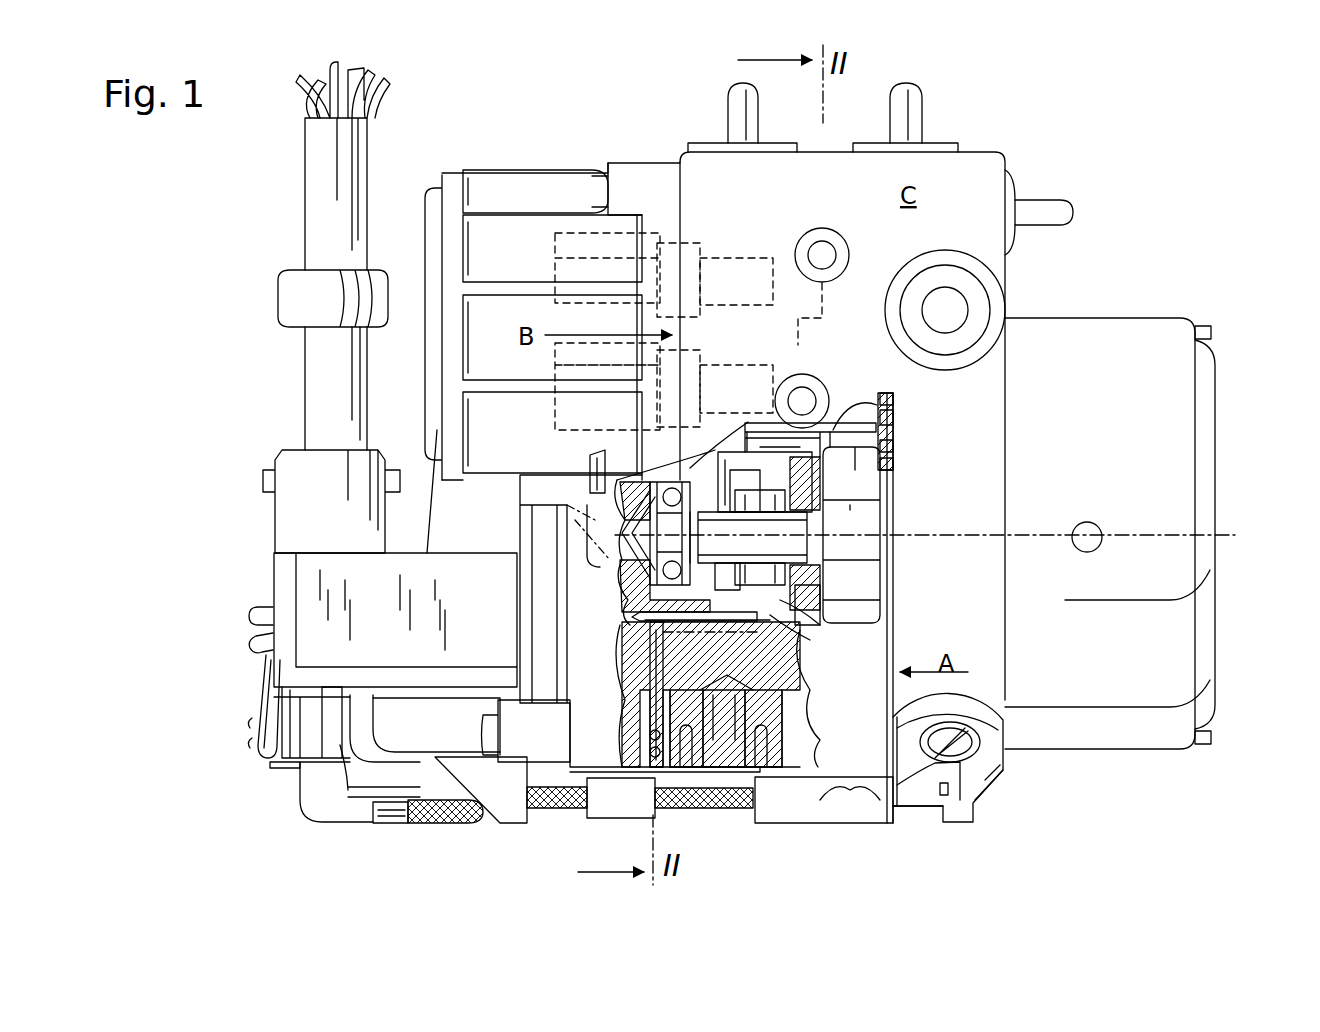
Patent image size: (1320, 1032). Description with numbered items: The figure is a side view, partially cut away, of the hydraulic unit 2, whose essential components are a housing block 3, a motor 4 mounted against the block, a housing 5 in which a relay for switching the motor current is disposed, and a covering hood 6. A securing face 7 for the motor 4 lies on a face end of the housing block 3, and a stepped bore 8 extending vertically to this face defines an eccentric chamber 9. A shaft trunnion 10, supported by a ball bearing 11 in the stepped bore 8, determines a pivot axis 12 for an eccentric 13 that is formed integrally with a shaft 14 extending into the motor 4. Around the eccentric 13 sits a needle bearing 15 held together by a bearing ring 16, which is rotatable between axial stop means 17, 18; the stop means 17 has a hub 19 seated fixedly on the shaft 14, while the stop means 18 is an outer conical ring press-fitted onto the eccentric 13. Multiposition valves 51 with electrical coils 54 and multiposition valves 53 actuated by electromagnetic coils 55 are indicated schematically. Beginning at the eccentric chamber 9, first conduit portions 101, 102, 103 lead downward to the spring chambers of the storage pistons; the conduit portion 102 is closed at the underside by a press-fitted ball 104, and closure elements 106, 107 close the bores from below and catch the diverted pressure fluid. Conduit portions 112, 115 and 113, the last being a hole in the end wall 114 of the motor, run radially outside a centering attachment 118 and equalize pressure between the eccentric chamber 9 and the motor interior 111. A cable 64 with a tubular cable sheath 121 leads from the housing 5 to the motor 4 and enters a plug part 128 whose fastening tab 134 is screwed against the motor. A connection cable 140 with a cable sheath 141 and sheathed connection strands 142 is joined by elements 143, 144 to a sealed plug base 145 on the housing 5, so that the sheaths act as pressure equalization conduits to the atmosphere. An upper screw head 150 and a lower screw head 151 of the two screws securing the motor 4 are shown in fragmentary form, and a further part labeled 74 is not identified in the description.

The hydraulic unit 2 is at (995, 105).
The housing block 3 is at (992, 172).
The motor 4 is at (1160, 526).
The housing 5 is at (395, 620).
The covering hood 6 is at (432, 216).
The securing face 7 is at (885, 440).
The stepped bore 8 is at (724, 457).
The eccentric chamber 9 is at (755, 458).
The shaft trunnion 10 is at (596, 490).
The ball bearing 11 is at (617, 572).
The pivot axis 12 is at (540, 504).
The eccentric 13 is at (748, 537).
The shaft 14 is at (820, 520).
The needle bearing 15 is at (792, 553).
The bearing ring 16 is at (790, 612).
The axial stop means 17 is at (768, 600).
The axial stop means 18 is at (745, 630).
The hub 19 is at (775, 582).
The multiposition valves 51 is at (722, 270).
The multiposition valves 53 is at (745, 383).
The electrical coils 54 is at (560, 252).
The electromagnetic coils 55 is at (560, 398).
The cable 64 is at (443, 812).
The housing bracket 74 is at (562, 717).
The conduit portion 101 is at (622, 612).
The conduit portion 102 is at (648, 665).
The conduit portion 103 is at (652, 733).
The ball 104 is at (655, 758).
The closure element 106 is at (605, 797).
The closure element 107 is at (705, 805).
The interior of the motor 111 is at (883, 420).
The conduit portion 112 is at (842, 430).
The conduit portion 113 is at (885, 445).
The end wall 114 is at (885, 465).
The conduit portion 115 is at (885, 400).
The centering attachment 118 is at (853, 494).
The cable sheath 121 is at (420, 822).
The plug part 128 is at (988, 782).
The fastening tab 134 is at (978, 712).
The connection cable 140 is at (345, 305).
The cable sheath 141 is at (315, 175).
The connection strands 142 is at (378, 95).
The connection element 143 is at (333, 298).
The connection part 144 is at (312, 368).
The plug base 145 is at (331, 501).
The upper screw head 150 is at (1212, 326).
The lower screw head 151 is at (1212, 738).